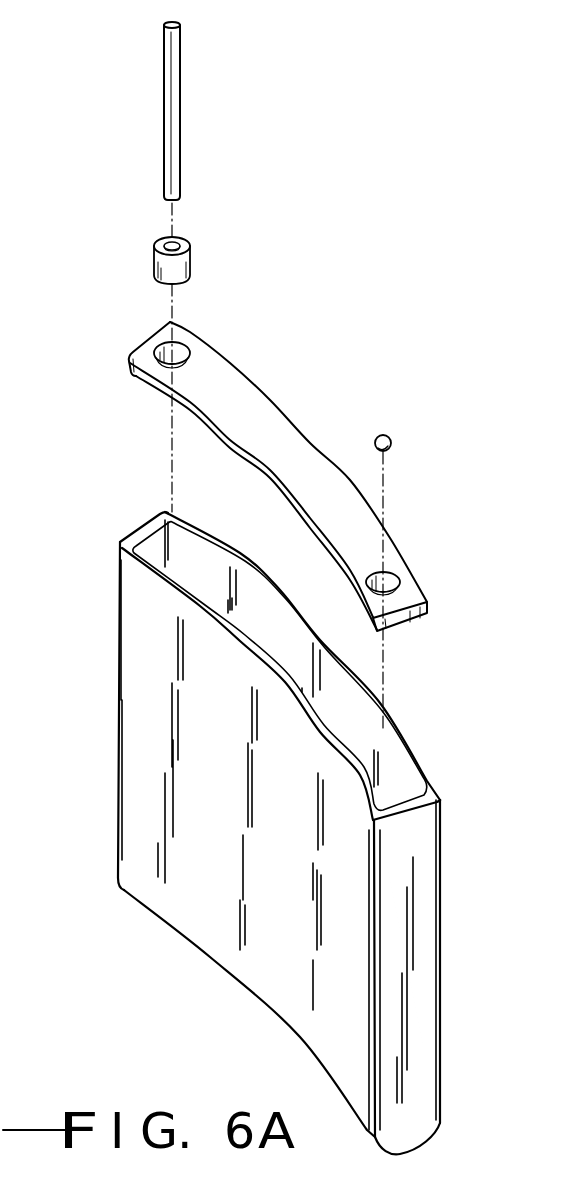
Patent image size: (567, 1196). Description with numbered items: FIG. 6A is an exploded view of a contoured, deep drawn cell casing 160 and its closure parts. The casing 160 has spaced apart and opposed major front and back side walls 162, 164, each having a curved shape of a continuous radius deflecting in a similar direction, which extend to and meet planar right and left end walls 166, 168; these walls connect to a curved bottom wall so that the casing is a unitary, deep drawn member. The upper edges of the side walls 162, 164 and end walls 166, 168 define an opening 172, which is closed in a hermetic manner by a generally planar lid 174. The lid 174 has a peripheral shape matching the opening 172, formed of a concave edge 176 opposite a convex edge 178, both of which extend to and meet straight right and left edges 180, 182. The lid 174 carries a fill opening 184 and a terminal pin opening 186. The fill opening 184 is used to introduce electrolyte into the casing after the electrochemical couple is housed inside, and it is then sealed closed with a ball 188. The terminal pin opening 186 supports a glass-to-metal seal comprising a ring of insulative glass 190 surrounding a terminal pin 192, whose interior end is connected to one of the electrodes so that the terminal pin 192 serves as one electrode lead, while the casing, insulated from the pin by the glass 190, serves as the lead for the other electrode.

The contoured casing 160 is at (422, 349).
The front side wall 162 is at (220, 942).
The back side wall 164 is at (407, 741).
The right end wall 166 is at (412, 838).
The left end wall 168 is at (150, 543).
The opening 172 is at (347, 713).
The lid 174 is at (295, 440).
The concave edge 176 is at (233, 444).
The convex edge 178 is at (273, 393).
The right edge 180 is at (408, 624).
The left edge 182 is at (141, 340).
The fill opening 184 is at (392, 578).
The terminal pin opening 186 is at (176, 358).
The ball 188 is at (391, 440).
The ring of insulative glass 190 is at (191, 255).
The terminal pin 192 is at (182, 108).